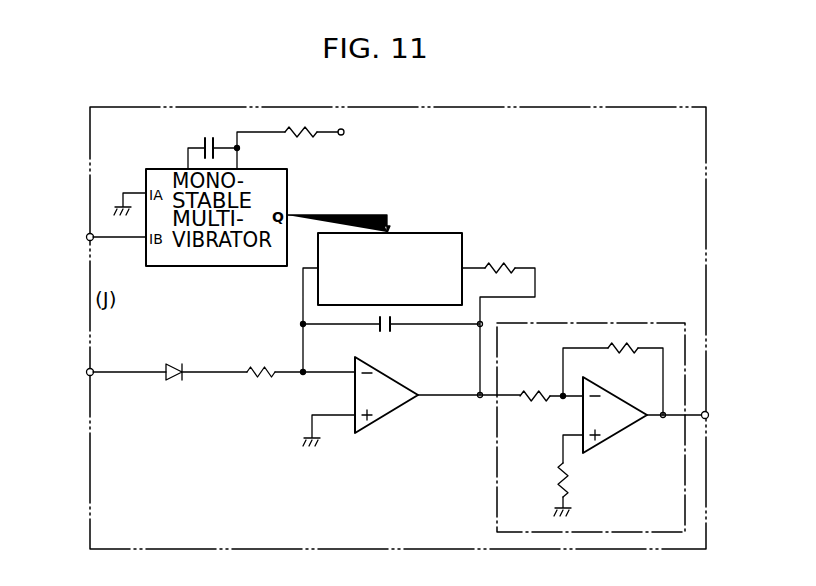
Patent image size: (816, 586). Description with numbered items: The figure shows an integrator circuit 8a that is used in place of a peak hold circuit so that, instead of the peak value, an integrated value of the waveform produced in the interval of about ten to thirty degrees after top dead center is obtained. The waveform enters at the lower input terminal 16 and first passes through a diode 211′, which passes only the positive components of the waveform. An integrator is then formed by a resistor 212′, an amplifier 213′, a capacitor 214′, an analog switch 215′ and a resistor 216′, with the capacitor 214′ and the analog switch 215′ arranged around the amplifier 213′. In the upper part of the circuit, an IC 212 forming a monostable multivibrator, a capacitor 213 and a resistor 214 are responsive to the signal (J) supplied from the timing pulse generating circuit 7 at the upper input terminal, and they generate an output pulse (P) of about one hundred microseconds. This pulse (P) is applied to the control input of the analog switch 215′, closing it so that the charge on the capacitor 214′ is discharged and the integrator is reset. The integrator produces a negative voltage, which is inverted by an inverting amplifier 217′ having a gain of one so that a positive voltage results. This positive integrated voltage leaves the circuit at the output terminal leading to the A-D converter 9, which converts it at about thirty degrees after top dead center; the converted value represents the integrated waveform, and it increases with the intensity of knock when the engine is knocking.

The integrator circuit 8a is at (627, 107).
The timing pulse generating circuit 7 is at (78, 234).
The input terminal 16 is at (78, 369).
The A-D converter 9 is at (715, 415).
The capacitor 213 is at (203, 142).
The resistor 214 is at (291, 138).
The IC forming a monostable multivibrator 212 is at (289, 210).
The diode 211′ is at (190, 350).
The resistor 212′ is at (266, 352).
The amplifier 213′ is at (392, 418).
The capacitor 214′ is at (388, 332).
The analog switch 215′ is at (410, 233).
The resistor 216′ is at (492, 266).
The inverting amplifier 217′ is at (615, 312).